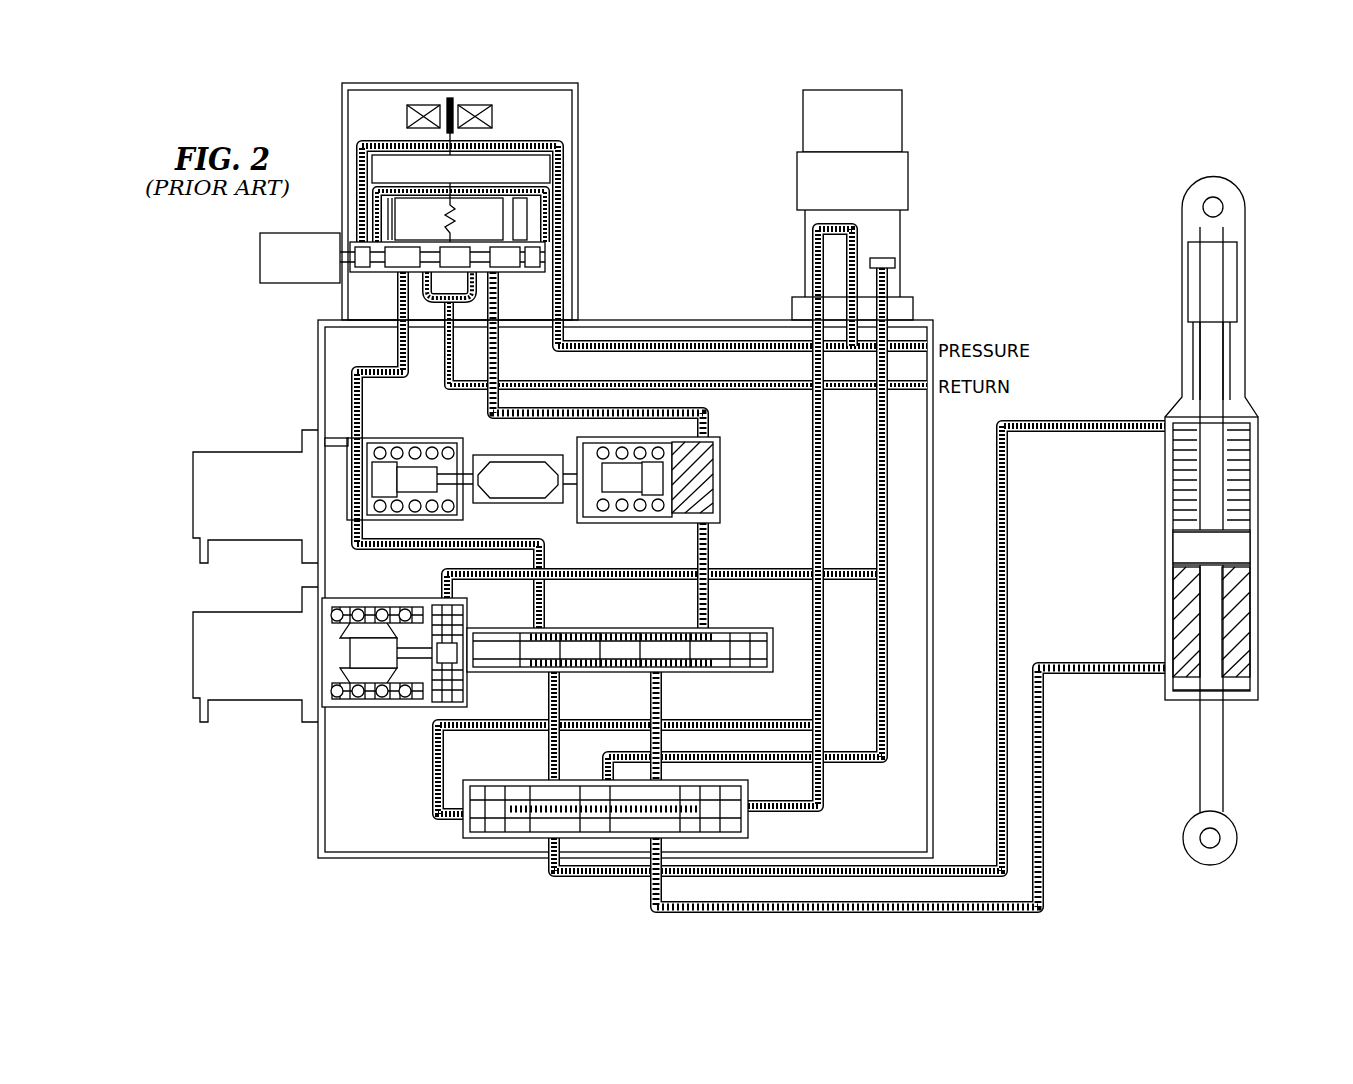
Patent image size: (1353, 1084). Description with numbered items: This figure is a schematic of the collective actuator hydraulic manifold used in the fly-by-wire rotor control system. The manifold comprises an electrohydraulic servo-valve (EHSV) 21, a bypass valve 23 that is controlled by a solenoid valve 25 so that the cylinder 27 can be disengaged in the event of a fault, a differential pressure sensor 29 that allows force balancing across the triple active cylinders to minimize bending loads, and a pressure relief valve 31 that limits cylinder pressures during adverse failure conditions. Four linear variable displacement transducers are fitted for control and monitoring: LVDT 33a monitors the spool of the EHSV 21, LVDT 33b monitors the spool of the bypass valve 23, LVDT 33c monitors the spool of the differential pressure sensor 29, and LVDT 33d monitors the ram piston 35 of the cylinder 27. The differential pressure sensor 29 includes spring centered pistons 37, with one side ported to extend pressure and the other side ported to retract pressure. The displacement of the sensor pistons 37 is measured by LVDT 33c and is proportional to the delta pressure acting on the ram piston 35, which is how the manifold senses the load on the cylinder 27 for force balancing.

The electrohydraulic servo-valve (EHSV) 21 is at (578, 200).
The bypass valve 23 is at (388, 707).
The solenoid valve 25 is at (908, 172).
The cylinder 27 is at (1164, 492).
The differential pressure sensor 29 is at (338, 438).
The pressure relief valve 31 is at (463, 838).
The linear variable displacement transducer (LVDT) 33a is at (258, 258).
The linear variable displacement transducer (LVDT) 33b is at (193, 500).
The linear variable displacement transducer (LVDT) 33c is at (193, 665).
The linear variable displacement transducer (LVDT) 33d is at (1195, 278).
The ram piston 35 is at (1245, 548).
The spring centered pistons 37 is at (386, 465).